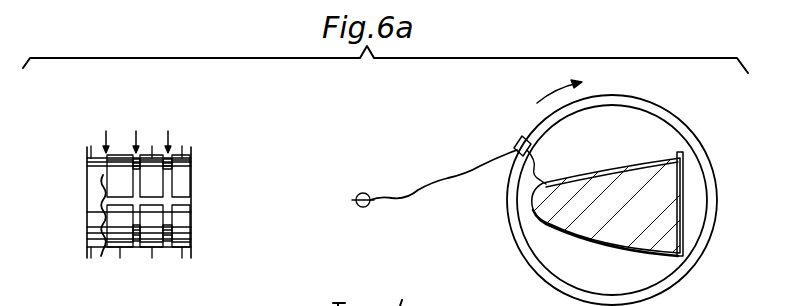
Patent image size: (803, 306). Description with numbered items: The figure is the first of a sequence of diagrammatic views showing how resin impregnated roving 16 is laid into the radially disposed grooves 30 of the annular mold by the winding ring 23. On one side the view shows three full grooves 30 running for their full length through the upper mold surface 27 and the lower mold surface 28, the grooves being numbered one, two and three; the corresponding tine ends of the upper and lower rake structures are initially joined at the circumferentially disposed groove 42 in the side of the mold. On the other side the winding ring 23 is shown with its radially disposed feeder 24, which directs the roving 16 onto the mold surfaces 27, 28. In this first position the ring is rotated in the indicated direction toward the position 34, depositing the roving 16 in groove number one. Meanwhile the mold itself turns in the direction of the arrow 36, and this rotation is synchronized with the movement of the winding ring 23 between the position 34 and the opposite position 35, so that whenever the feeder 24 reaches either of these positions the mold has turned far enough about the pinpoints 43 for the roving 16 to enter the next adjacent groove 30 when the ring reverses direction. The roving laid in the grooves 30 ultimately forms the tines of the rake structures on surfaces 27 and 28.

The roving 16 is at (446, 172).
The winding ring 23 is at (542, 287).
The feeder 24 is at (520, 138).
The upper mold surface 27 is at (204, 162).
The lower mold surface 28 is at (204, 237).
The radially disposed grooves 30 is at (190, 217).
The position 34 is at (692, 152).
The position 35 is at (690, 248).
The direction arrow 36 is at (153, 273).
The circumferentially disposed groove 42 is at (96, 188).
The pinpoints 43 is at (125, 156).